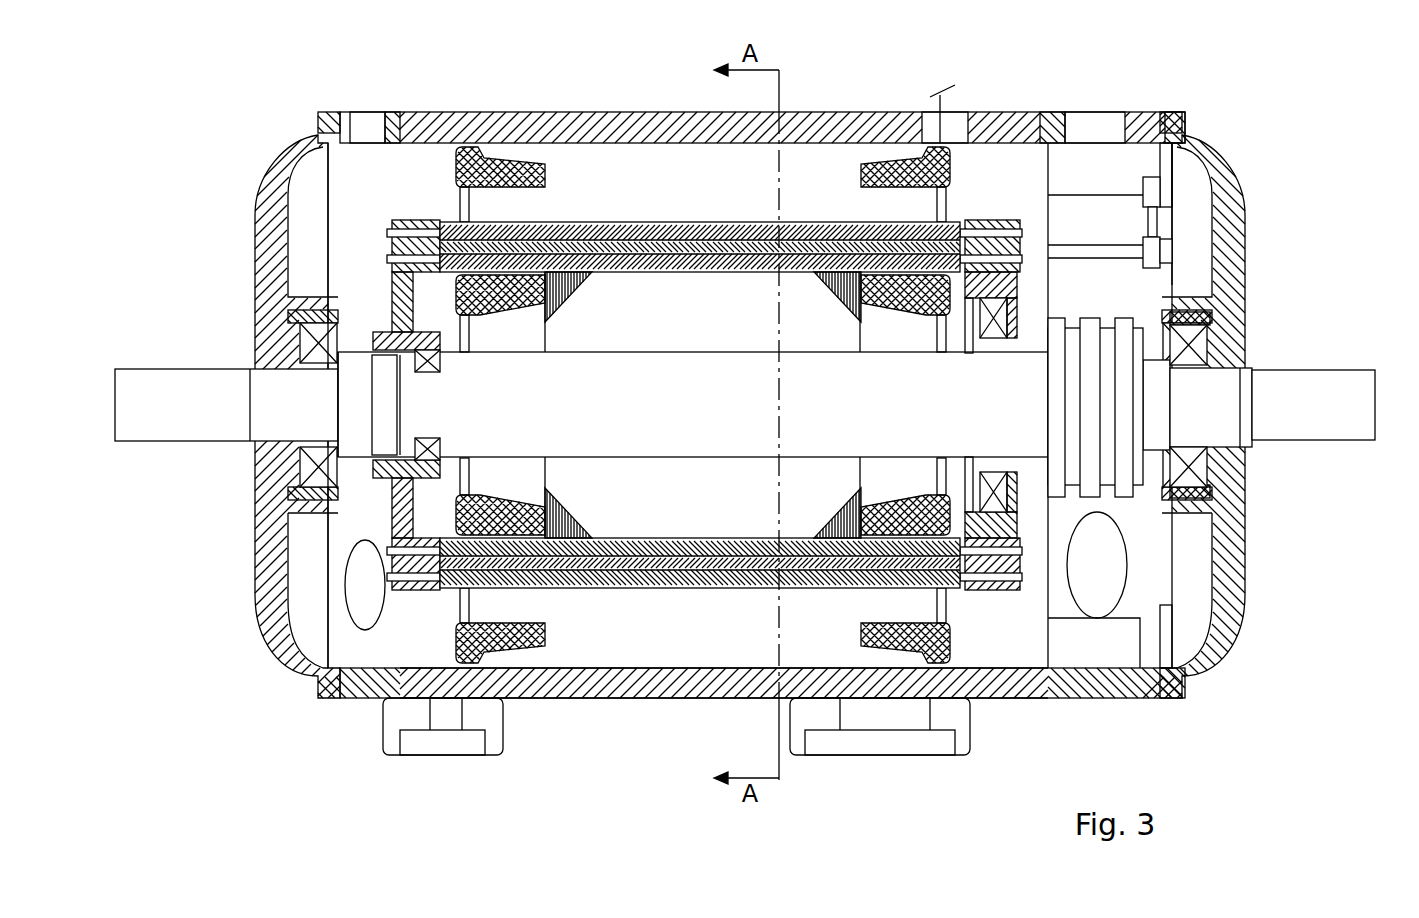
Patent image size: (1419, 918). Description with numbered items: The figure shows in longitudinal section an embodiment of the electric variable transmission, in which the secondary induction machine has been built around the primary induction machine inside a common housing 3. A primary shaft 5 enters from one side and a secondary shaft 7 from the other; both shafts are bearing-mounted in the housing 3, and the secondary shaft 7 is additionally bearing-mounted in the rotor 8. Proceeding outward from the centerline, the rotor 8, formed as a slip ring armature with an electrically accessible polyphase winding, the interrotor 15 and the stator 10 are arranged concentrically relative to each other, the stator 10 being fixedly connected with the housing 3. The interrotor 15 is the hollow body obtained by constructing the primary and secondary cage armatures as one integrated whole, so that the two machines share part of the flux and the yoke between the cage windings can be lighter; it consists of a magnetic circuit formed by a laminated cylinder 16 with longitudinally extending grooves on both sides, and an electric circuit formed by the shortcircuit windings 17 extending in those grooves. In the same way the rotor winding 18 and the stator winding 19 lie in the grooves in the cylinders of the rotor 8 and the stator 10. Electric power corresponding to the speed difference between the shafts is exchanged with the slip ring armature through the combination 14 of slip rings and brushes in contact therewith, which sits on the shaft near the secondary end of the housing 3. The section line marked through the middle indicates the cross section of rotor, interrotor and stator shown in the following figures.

The housing 3 is at (426, 130).
The primary shaft 5 is at (1325, 368).
The secondary shaft 7 is at (175, 368).
The rotor 8 is at (633, 522).
The stator 10 is at (578, 186).
The combination of slip rings and brushes 14 is at (1107, 313).
The interrotor 15 is at (795, 215).
The laminated cylinder 16 is at (740, 250).
The shortcircuit windings 17 is at (700, 315).
The rotor winding 18 is at (503, 503).
The stator winding 19 is at (490, 160).